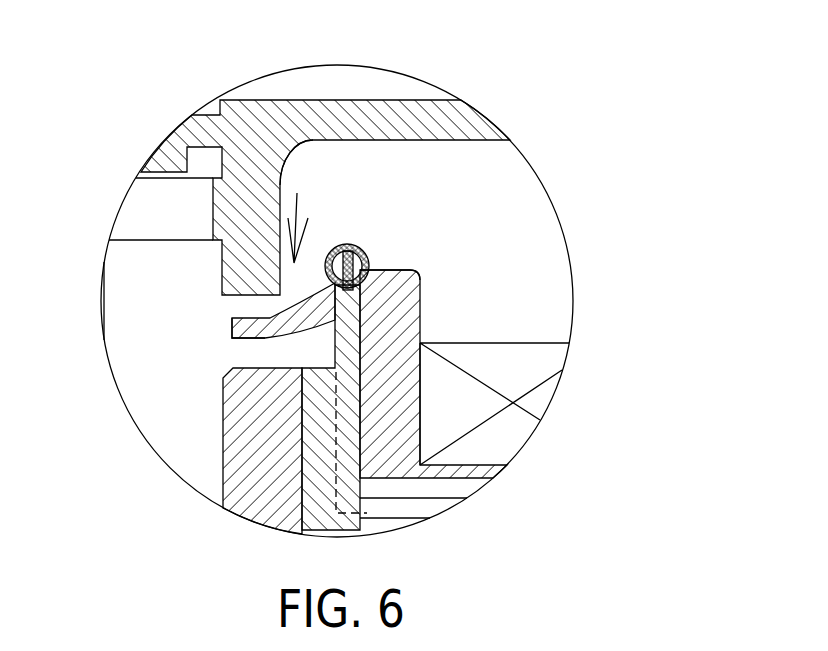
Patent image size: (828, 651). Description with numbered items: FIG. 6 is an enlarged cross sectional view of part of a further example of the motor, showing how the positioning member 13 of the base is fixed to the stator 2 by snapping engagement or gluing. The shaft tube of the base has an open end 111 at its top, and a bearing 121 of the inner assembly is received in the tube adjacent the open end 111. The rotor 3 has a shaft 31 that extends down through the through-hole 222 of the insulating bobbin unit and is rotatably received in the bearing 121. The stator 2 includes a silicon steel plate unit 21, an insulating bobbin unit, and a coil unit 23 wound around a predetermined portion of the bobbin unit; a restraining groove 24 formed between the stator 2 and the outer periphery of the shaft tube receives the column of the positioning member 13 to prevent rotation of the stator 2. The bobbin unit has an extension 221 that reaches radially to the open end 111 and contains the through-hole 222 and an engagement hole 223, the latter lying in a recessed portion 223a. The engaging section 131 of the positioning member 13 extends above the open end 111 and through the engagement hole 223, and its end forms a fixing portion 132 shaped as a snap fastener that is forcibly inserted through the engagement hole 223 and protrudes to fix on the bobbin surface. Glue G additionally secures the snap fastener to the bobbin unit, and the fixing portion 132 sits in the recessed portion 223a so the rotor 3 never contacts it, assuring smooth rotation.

The stator 2 is at (487, 288).
The rotor 3 is at (385, 85).
The positioning member 13 is at (658, 187).
The silicon steel plate unit 21 is at (445, 487).
The coil unit 23 is at (507, 353).
The restraining groove 24 is at (367, 513).
The shaft 31 is at (162, 352).
The open end 111 is at (297, 193).
The bearing 121 is at (245, 483).
The engaging section 131 is at (350, 327).
The fixing portion 132 is at (366, 254).
The extension 221 is at (267, 323).
The through-hole 222 is at (225, 320).
The engagement hole 223 is at (333, 283).
The recessed portion 223a is at (397, 281).
The glue G is at (345, 246).